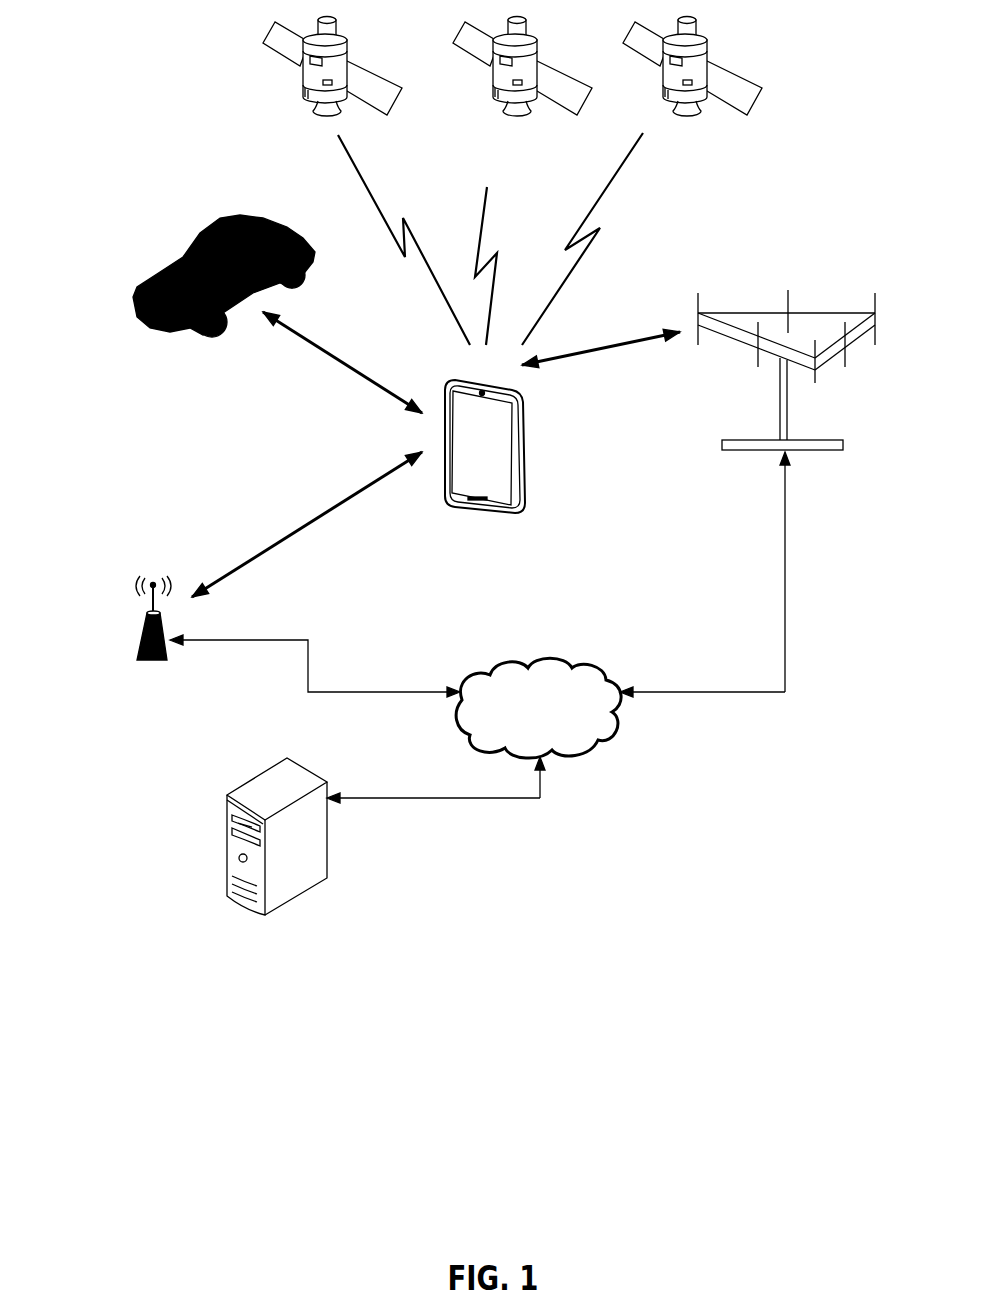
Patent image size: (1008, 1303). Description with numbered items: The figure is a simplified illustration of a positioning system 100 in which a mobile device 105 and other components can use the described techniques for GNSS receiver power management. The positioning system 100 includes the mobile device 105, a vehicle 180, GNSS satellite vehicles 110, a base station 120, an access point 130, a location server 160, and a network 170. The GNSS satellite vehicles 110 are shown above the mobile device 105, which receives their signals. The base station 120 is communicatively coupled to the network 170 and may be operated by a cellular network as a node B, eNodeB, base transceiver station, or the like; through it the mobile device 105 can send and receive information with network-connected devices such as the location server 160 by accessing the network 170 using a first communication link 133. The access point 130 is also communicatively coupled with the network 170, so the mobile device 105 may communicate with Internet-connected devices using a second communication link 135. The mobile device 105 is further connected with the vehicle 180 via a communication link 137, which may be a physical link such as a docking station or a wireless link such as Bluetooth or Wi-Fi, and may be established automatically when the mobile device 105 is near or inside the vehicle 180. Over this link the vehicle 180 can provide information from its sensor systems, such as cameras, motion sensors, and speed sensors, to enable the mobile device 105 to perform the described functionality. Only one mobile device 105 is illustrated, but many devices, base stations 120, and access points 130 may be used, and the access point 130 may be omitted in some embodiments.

The positioning system 100 is at (165, 1117).
The mobile device 105 is at (452, 383).
The GNSS satellite vehicles 110 is at (234, 75).
The base station 120 is at (813, 450).
The access point 130 is at (165, 665).
The first communication link 133 is at (590, 353).
The second communication link 135 is at (317, 520).
The communication link 137 is at (350, 372).
The location server 160 is at (302, 775).
The network 170 is at (602, 738).
The vehicle 180 is at (200, 237).